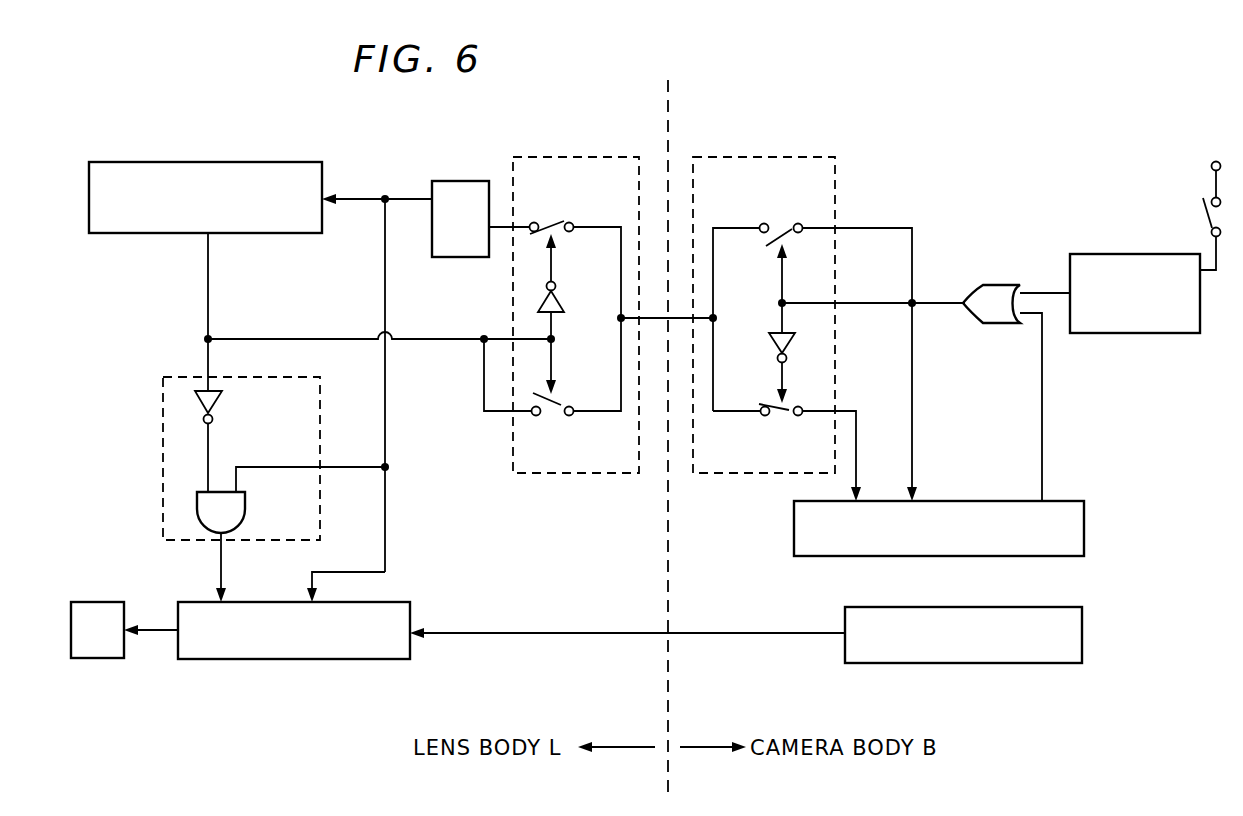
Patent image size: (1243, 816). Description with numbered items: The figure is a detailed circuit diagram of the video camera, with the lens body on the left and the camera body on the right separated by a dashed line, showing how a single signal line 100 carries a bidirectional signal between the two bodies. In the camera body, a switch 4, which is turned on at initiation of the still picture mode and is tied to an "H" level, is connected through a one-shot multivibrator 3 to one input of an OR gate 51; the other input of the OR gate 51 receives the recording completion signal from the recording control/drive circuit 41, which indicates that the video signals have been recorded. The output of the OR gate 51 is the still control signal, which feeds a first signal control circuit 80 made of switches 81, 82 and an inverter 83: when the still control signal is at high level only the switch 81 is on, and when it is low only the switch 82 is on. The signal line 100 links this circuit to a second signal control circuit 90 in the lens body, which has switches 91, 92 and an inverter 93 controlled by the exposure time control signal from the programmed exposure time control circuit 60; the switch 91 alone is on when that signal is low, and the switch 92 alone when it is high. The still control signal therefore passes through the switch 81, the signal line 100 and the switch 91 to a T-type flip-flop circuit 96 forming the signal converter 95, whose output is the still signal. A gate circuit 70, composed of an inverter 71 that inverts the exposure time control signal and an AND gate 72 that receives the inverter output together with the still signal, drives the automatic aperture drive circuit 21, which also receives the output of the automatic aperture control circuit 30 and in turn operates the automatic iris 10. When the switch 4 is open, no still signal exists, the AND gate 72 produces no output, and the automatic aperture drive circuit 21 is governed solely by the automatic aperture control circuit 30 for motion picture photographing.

The one-shot multivibrator 3 is at (1130, 334).
The switch 4 is at (1200, 201).
The automatic iris (A.I) 10 is at (96, 602).
The automatic aperture drive circuit 21 is at (268, 659).
The automatic aperture control circuit 30 is at (1040, 663).
The recording control/drive circuit 41 is at (1078, 557).
The OR gate 51 is at (993, 326).
The programmed exposure time control circuit 60 is at (288, 162).
The gate circuit 70 is at (162, 397).
The inverter 71 is at (220, 400).
The AND gate 72 is at (245, 510).
The first signal control circuit 80 is at (836, 193).
The switch 81 is at (780, 225).
The switch 82 is at (781, 415).
The inverter 83 is at (771, 349).
The second signal control circuit 90 is at (595, 478).
The switch 91 is at (548, 222).
The switch 92 is at (552, 415).
The inverter 93 is at (563, 300).
The signal converter circuit 95 is at (455, 188).
The T-type flip-flop circuit 96 is at (460, 181).
The signal line 100 is at (655, 318).